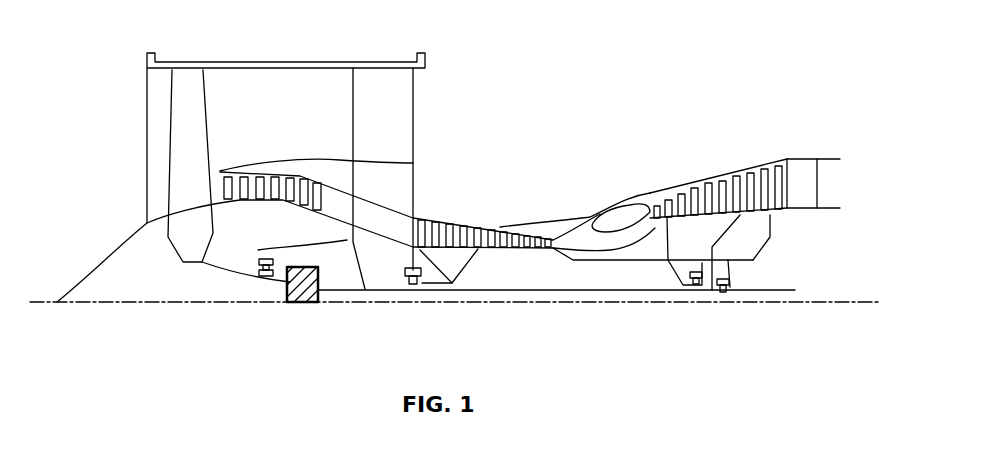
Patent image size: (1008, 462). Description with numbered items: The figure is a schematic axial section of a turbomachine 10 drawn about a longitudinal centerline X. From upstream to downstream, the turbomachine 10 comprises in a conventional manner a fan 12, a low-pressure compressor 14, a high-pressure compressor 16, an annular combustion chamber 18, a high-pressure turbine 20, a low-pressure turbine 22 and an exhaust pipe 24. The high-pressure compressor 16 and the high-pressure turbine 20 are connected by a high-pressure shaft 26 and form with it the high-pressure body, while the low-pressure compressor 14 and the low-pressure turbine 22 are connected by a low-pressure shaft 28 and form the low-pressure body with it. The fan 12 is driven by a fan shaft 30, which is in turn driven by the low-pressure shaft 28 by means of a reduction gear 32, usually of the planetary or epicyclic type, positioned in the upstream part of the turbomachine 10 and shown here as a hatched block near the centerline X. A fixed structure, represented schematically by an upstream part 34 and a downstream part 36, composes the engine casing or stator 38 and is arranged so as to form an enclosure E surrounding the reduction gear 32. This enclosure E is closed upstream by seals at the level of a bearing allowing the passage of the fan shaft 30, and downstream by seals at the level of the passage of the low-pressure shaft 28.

The turbomachine 10 is at (521, 104).
The fan 12 is at (180, 130).
The low-pressure compressor 14 is at (243, 172).
The high-pressure compressor 16 is at (447, 220).
The annular combustion chamber 18 is at (618, 213).
The high-pressure turbine 20 is at (653, 204).
The low-pressure turbine 22 is at (773, 174).
The exhaust pipe 24 is at (828, 186).
The high-pressure shaft 26 is at (588, 262).
The low-pressure shaft 28 is at (513, 293).
The fan shaft 30 is at (247, 278).
The reduction gear 32 is at (303, 290).
The upstream part 34 is at (258, 250).
The downstream part 36 is at (370, 252).
The engine casing or stator 38 is at (333, 236).
The enclosure E is at (330, 268).
The engine centerline axis X is at (37, 303).